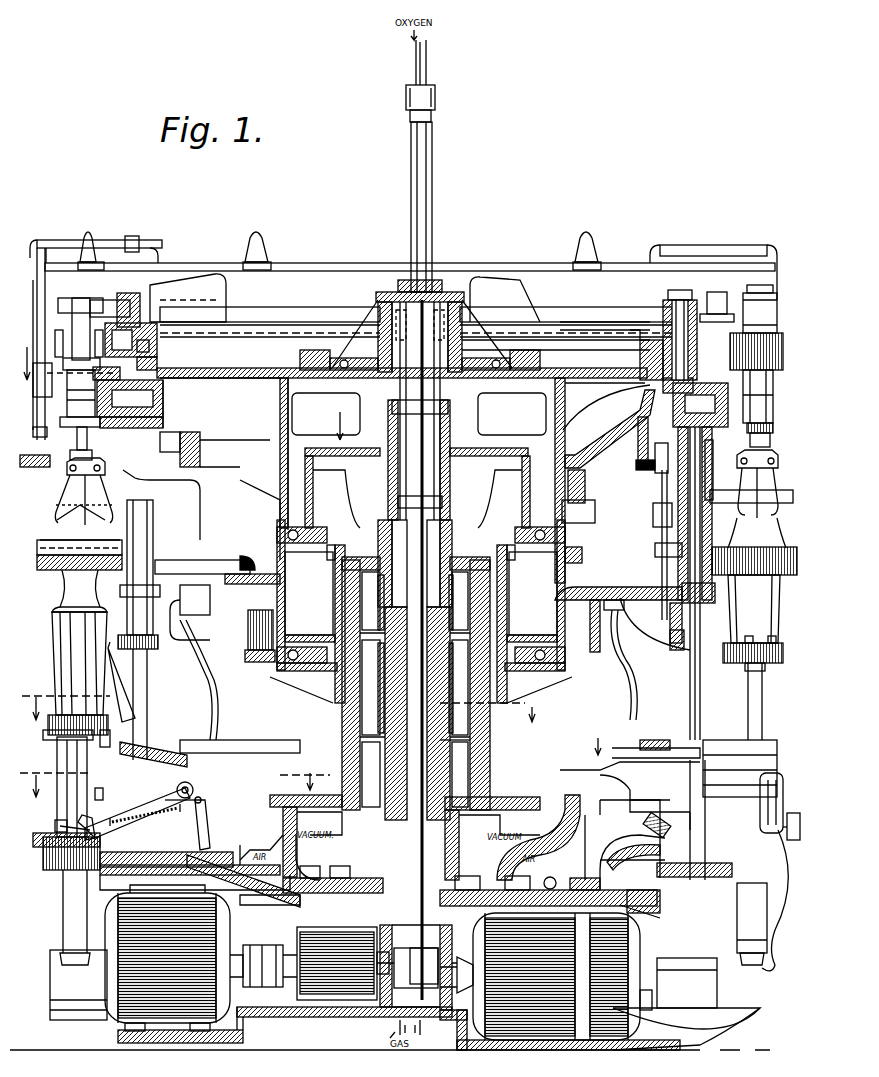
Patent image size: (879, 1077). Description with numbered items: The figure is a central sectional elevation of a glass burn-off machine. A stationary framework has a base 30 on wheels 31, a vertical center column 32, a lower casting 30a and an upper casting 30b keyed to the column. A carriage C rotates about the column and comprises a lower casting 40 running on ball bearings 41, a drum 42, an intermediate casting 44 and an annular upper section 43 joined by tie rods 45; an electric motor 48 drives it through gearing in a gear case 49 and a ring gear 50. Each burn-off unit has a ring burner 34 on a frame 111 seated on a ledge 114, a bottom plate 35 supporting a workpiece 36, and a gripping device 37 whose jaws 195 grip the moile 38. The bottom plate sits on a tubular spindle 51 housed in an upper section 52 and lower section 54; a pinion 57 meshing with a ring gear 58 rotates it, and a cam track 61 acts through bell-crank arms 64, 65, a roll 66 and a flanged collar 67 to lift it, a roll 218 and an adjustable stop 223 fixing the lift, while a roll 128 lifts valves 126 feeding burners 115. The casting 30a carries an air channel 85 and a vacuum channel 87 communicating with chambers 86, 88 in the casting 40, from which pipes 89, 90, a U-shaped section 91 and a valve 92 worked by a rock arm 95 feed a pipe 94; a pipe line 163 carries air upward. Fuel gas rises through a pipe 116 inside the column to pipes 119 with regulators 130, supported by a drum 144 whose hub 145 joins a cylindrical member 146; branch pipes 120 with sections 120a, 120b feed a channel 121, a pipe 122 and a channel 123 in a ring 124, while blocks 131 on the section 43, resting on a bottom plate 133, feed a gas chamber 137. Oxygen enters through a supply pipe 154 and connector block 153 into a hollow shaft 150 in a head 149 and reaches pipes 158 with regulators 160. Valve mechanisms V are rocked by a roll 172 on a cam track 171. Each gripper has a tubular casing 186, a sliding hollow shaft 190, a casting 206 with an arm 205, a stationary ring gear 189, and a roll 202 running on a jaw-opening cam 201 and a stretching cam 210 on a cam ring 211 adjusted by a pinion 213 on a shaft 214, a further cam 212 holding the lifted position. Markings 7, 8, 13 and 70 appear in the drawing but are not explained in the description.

The supply pipe 154 is at (428, 60).
The connector block 153 is at (436, 106).
The hollow shaft 150 is at (433, 178).
The head 149 is at (437, 268).
The drum 144 is at (463, 300).
The hub 145 is at (437, 343).
The cylindrical member 146 is at (428, 482).
The pipe 116 is at (425, 524).
The upper spider or casting 30b is at (240, 375).
The cam 212 is at (300, 308).
The pipes 119 is at (318, 258).
The branch pipes 120 is at (58, 248).
The regulators 130 is at (90, 232).
The oxygen regulators 160 is at (258, 236).
The pipes 158 is at (515, 272).
The section line 13 is at (212, 362).
The annular channel 121 is at (296, 598).
The center column 32 is at (385, 712).
The drum 42 is at (486, 737).
The section line 7 is at (284, 698).
The section line 8 is at (175, 774).
The lower table or casting 40 is at (325, 803).
The vacuum chamber 88 is at (470, 878).
The annular air pressure chamber 86 is at (255, 845).
The ball bearings 41 is at (262, 890).
The base 30 is at (315, 1022).
The vacuum chamber or channel 87 is at (330, 935).
The air pressure chamber or channel 85 is at (268, 950).
The gear case 49 is at (178, 1023).
The electric motor 48 is at (628, 950).
The wheels 31 is at (95, 1050).
The ring gear 50 is at (232, 890).
The lower spider or casting 30a is at (190, 903).
The supporting blocks 131 is at (40, 397).
The arm 205 is at (80, 305).
The cam follower roll 202 is at (120, 300).
The stationary cam track 201 is at (130, 292).
The cam ring 211 is at (157, 345).
The stationary ring gear 189 is at (157, 360).
The chamber 137 is at (153, 402).
The bottom plate 133 is at (215, 418).
The cam follower roll 172 is at (200, 438).
The stationary cam track 171 is at (205, 460).
The valve mechanisms V is at (181, 434).
The gripping device 37 is at (63, 460).
The gripping jaws 195 is at (78, 515).
The vertical section 120a is at (50, 555).
The moile 38 is at (58, 594).
The ring burner 34 is at (52, 575).
The workpiece 36 is at (52, 650).
The bottom plate 35 is at (48, 722).
The pin 70 is at (776, 640).
The vertical tubular spindle 51 is at (764, 690).
The upper section 52 is at (57, 760).
The pinion 57 is at (45, 870).
The lower tubular section 54 is at (63, 920).
The ring gear 58 is at (108, 852).
The roll 218 is at (108, 810).
The roll 128 is at (170, 780).
The arm 65 is at (150, 828).
The arm 64 is at (190, 818).
The cam track 61 is at (215, 810).
The flanged collar 67 is at (52, 826).
The cam follower roll 66 is at (640, 845).
The adjustable stop 223 is at (115, 760).
The annular channel 123 is at (125, 757).
The ring 124 is at (250, 745).
The frame 111 is at (150, 652).
The burners 115 is at (147, 672).
The vertical tie rods 45 is at (150, 692).
The valves 126 is at (162, 720).
The pipe line 163 is at (214, 518).
The section 120b is at (212, 557).
The annular ledge 114 is at (198, 590).
The intermediate section or casting 44 is at (262, 668).
The pipe 122 is at (625, 673).
The framework or carriage C is at (594, 735).
The vacuum pipe 90 is at (600, 770).
The pipes 89 is at (628, 790).
The U-shaped pipe section 91 is at (775, 775).
The valve 92 is at (777, 790).
The rock arm 95 is at (795, 813).
The pipe 94 is at (782, 890).
The moile stretching cam 210 is at (588, 310).
The shaft 214 is at (665, 310).
The pinion 213 is at (650, 360).
The casting 206 is at (784, 345).
The tubular casing 186 is at (788, 382).
The hollow shaft 190 is at (773, 436).
The annular upper section 43 is at (672, 403).